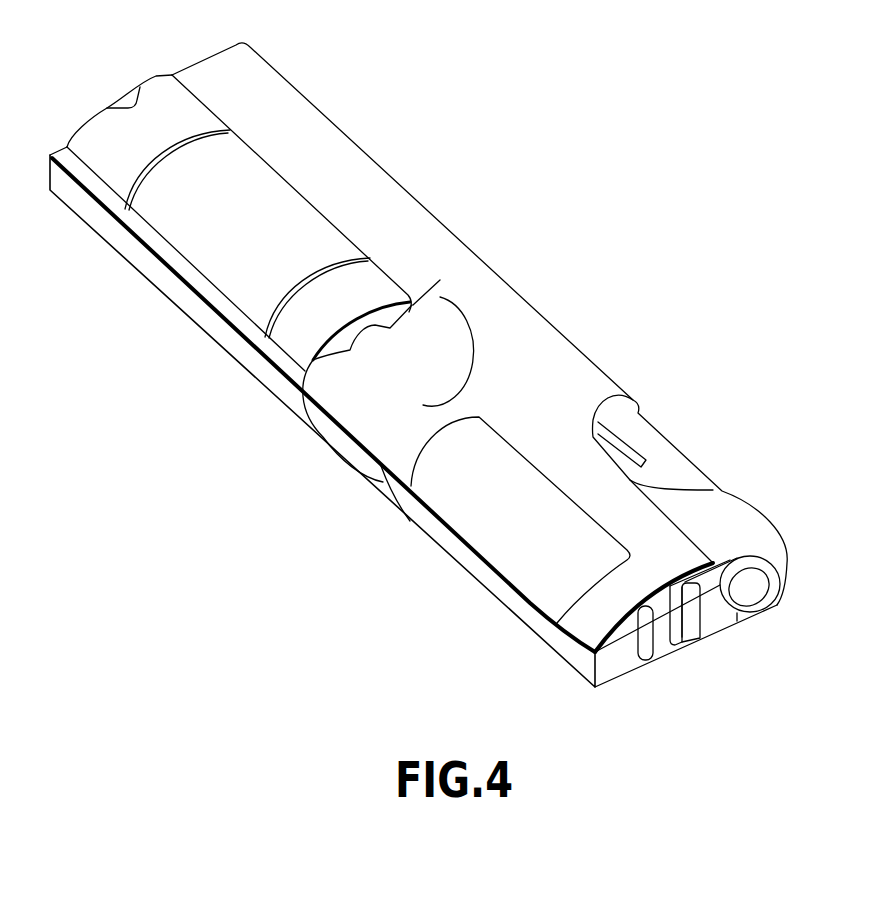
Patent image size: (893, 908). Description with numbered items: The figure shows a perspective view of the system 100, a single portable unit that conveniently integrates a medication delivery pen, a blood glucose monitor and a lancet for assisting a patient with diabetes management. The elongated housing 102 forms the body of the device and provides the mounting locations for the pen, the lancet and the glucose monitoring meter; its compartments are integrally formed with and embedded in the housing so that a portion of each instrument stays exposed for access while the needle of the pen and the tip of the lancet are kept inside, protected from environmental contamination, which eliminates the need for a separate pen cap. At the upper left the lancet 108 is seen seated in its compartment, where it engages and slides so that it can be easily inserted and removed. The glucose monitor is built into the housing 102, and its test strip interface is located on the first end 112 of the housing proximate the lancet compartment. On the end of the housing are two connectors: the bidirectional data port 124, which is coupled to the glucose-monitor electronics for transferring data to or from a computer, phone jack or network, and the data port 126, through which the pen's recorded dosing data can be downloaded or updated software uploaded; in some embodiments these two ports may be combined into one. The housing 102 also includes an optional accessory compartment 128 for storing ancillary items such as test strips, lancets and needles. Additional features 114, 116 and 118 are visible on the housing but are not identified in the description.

The system 100 is at (186, 504).
The housing 102 is at (532, 337).
The lancet 108 is at (88, 137).
The first end 112 is at (280, 100).
The ring 114 is at (713, 617).
The hinge 116 is at (407, 223).
The base plate 118 is at (497, 605).
The bidirectional data port 124 is at (648, 653).
The data port 126 is at (693, 620).
The accessory compartment 128 is at (445, 499).